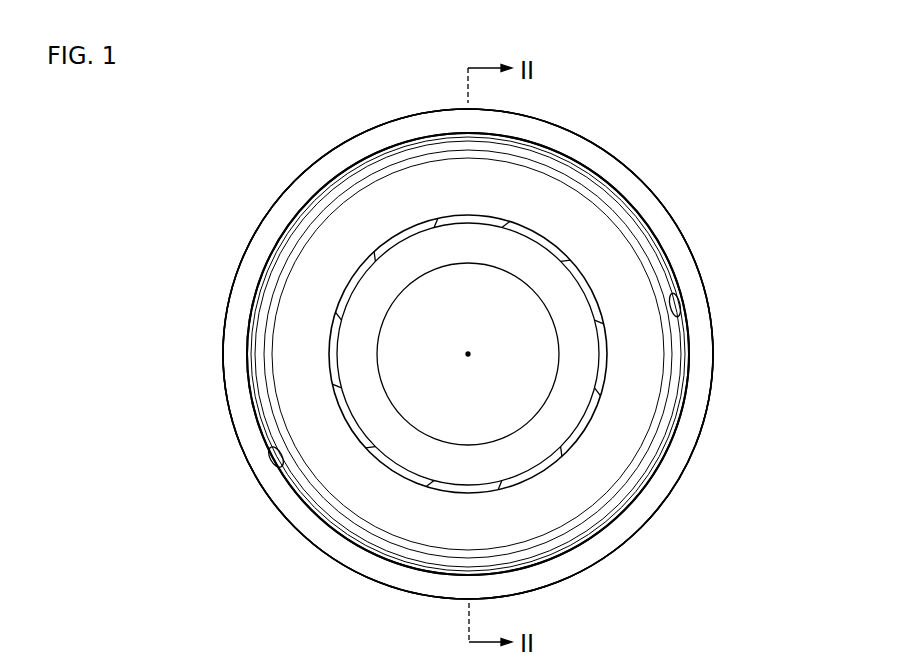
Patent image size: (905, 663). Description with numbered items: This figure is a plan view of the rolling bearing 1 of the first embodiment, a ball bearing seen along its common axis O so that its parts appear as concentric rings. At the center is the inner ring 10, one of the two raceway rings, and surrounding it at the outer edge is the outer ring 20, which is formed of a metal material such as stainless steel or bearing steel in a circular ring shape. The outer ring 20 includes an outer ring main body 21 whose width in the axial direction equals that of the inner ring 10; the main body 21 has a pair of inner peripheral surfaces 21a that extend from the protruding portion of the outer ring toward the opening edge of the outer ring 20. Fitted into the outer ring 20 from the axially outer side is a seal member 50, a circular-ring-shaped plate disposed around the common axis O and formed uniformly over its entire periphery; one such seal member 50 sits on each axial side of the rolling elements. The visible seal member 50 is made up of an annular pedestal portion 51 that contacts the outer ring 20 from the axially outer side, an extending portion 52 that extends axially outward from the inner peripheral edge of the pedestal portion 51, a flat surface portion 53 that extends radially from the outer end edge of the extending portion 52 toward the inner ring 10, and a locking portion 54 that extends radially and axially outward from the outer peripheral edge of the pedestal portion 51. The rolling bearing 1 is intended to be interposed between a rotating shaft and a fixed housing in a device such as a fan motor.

The rolling bearing 1 is at (709, 106).
The inner ring 10 is at (592, 423).
The outer ring 20 is at (262, 206).
The outer ring main body 21 is at (257, 448).
The inner peripheral surface 21a is at (278, 463).
The seal member 50 is at (564, 146).
The pedestal portion 51 is at (593, 187).
The extending portion 52 is at (623, 225).
The flat surface portion 53 is at (622, 280).
The locking portion 54 is at (688, 317).
The common axis O is at (470, 353).